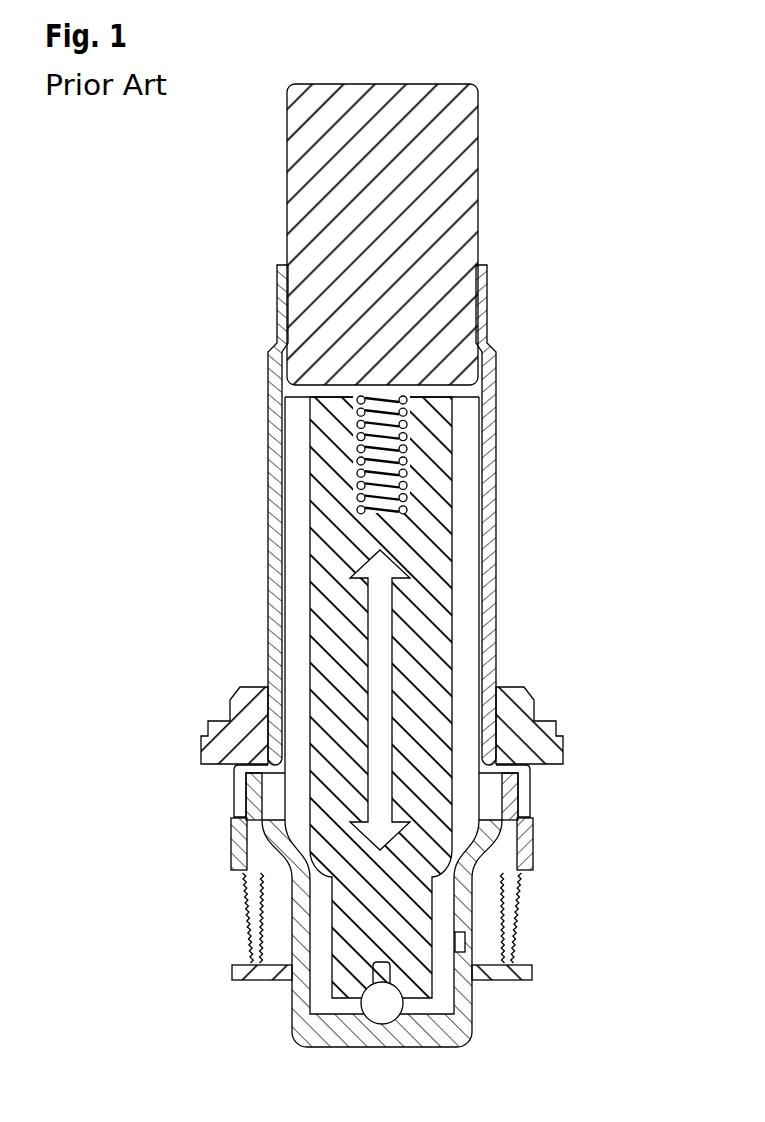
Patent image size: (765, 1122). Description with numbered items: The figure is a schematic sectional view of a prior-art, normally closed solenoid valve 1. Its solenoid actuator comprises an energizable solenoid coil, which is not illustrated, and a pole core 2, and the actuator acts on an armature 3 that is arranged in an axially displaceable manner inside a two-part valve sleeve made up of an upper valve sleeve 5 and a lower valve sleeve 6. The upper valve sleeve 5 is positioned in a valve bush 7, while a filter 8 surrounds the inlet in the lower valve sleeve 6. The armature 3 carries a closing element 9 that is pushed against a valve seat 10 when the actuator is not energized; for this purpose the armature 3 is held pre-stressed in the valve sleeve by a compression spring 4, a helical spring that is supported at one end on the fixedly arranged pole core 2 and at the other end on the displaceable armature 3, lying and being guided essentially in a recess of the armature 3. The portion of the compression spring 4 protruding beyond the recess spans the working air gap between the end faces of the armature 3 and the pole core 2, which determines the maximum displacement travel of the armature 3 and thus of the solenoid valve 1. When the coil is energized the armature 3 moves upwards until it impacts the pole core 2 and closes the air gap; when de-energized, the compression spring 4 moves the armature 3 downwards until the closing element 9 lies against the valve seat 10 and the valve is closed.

The solenoid valve 1 is at (578, 142).
The pole core 2 is at (452, 212).
The armature 3 is at (422, 568).
The compression spring 4 is at (410, 420).
The upper valve sleeve 5 is at (490, 475).
The lower valve sleeve 6 is at (280, 862).
The valve bush 7 is at (512, 722).
The filter 8 is at (515, 917).
The closing element 9 is at (405, 1007).
The valve seat 10 is at (360, 1007).